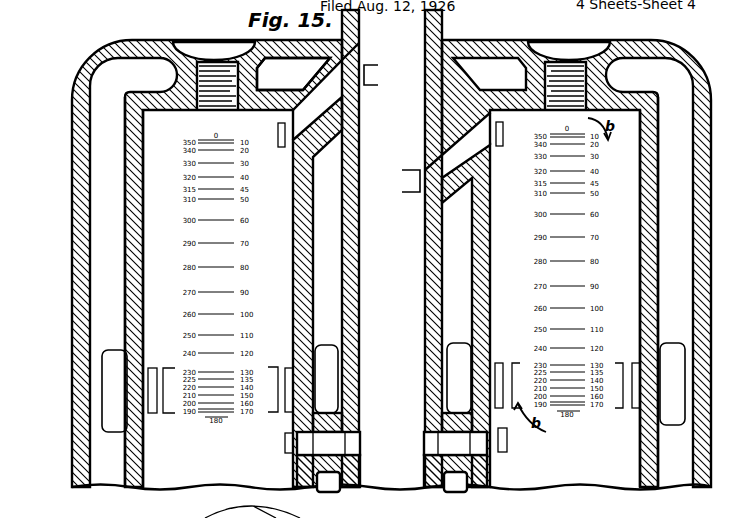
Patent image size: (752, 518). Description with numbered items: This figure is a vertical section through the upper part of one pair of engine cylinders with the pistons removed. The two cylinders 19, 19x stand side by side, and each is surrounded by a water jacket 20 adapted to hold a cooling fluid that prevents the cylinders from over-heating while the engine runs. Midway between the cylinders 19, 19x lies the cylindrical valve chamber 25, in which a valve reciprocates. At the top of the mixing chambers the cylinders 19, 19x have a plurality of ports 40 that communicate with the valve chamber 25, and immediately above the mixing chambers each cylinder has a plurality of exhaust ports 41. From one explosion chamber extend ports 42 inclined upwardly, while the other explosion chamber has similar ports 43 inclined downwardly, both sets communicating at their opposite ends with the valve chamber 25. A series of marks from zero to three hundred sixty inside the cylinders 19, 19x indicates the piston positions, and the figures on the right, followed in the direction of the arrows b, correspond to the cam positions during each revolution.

The cylinder 19 is at (145, 261).
The cylinder 19x is at (632, 308).
The water jacket 20 is at (97, 181).
The cylindrical valve chamber 25 is at (412, 31).
The ports 40 is at (297, 444).
The exhaust ports 41 is at (494, 373).
The ports 42 is at (318, 88).
The ports 43 is at (449, 130).